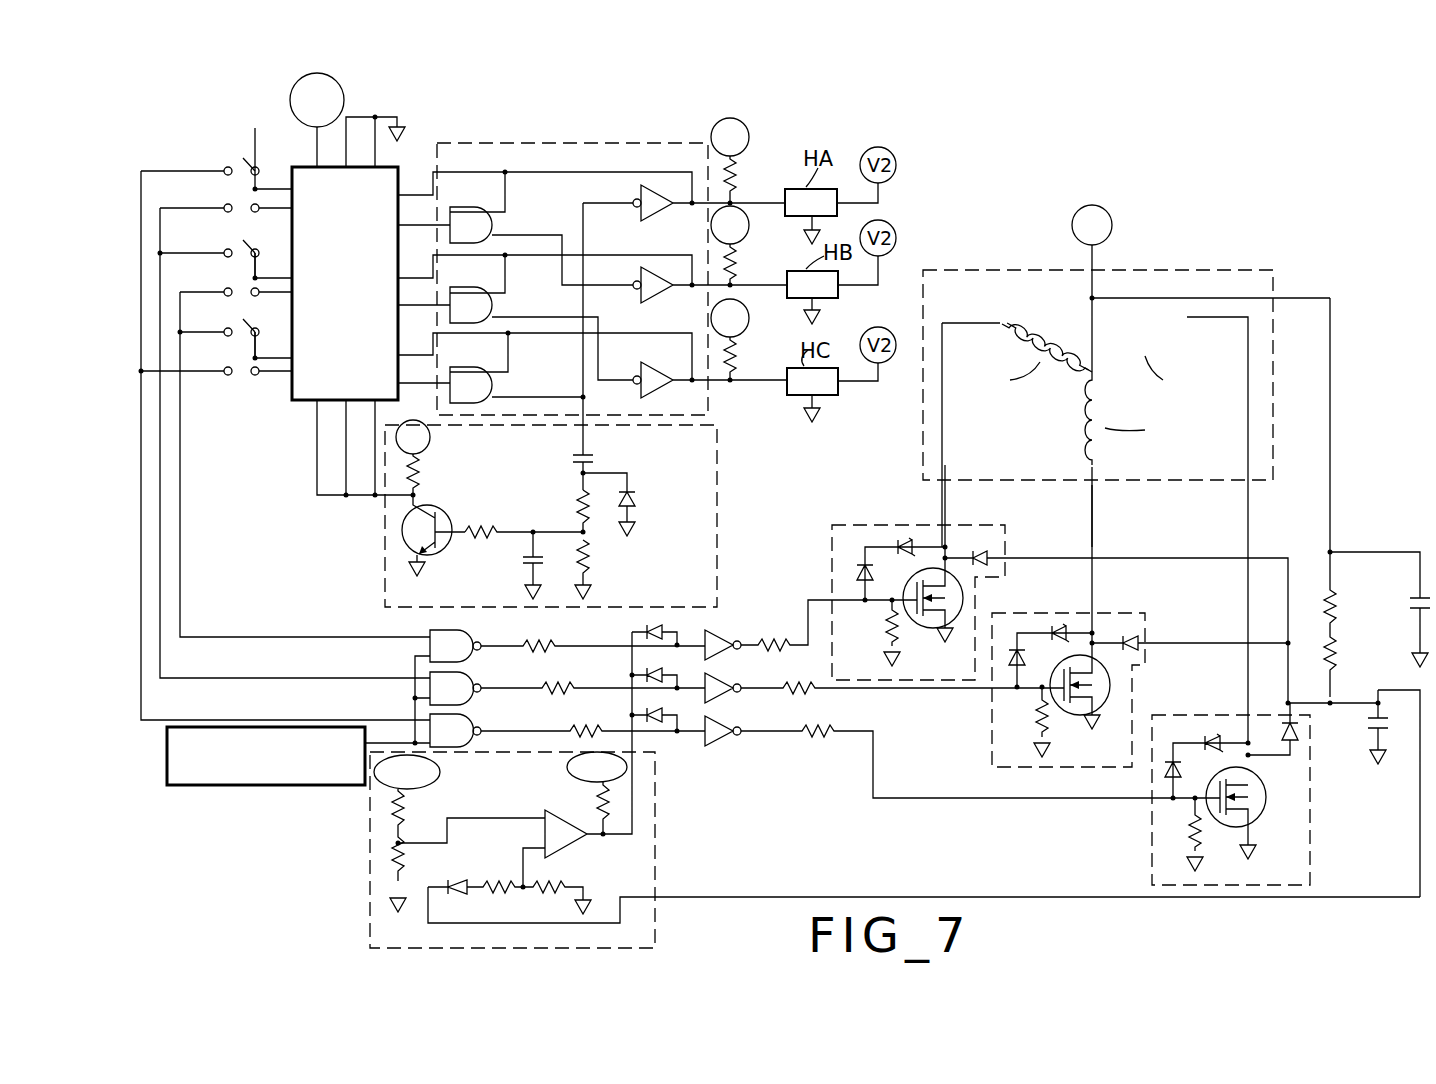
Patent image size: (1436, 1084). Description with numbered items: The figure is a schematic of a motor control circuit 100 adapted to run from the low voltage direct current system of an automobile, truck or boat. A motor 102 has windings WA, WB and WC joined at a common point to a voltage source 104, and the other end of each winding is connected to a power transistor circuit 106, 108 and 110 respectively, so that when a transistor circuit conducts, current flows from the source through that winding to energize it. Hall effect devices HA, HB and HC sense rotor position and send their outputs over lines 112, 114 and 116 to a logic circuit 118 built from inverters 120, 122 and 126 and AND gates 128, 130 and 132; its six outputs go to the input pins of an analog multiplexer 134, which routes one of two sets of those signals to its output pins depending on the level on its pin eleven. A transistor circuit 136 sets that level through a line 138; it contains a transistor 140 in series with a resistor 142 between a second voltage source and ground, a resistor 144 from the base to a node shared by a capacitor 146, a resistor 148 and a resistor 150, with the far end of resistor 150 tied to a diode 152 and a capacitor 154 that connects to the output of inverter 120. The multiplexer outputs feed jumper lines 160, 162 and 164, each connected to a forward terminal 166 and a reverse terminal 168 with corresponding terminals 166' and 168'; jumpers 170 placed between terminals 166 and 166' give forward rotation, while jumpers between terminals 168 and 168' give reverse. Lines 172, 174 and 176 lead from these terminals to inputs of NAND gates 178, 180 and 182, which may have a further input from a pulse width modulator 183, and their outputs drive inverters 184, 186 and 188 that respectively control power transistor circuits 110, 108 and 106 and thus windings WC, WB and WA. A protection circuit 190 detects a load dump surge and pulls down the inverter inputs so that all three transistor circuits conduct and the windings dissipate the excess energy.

The circuit 100 is at (920, 185).
The motor 102 is at (1227, 270).
The voltage source 104 is at (1112, 222).
The power transistor circuit 106 is at (1310, 802).
The power transistor circuit 108 is at (1112, 613).
The power transistor circuit 110 is at (880, 525).
The line 112 is at (766, 198).
The line 114 is at (766, 285).
The line 116 is at (760, 384).
The logic circuit 118 is at (490, 143).
The inverter 120 is at (648, 196).
The inverter 122 is at (650, 278).
The inverter 126 is at (653, 370).
The AND gate 128 is at (480, 204).
The AND gate 130 is at (480, 284).
The AND gate 132 is at (480, 367).
The analog multiplexer 134 is at (292, 388).
The transistor circuit 136 is at (717, 478).
The line 138 is at (375, 440).
The transistor 140 is at (428, 506).
The resistor 142 is at (422, 470).
The resistor 144 is at (478, 526).
The capacitor 146 is at (522, 562).
The resistor 148 is at (595, 556).
The resistor 150 is at (582, 500).
The diode 152 is at (637, 500).
The capacitor 154 is at (572, 457).
The jumper line 160 is at (258, 176).
The jumper line 162 is at (259, 272).
The jumper line 164 is at (259, 352).
The forward terminal 166 is at (289, 222).
The terminal 166' is at (189, 237).
The reverse terminal 168 is at (296, 291).
The terminal 168' is at (198, 294).
The jumper 170 is at (243, 158).
The line 172 is at (141, 518).
The line 174 is at (160, 480).
The line 176 is at (180, 442).
The NAND gate 178 is at (466, 632).
The NAND gate 180 is at (474, 676).
The NAND gate 182 is at (478, 718).
The pulse width modulator 183 is at (265, 786).
The inverter 184 is at (722, 630).
The inverter 186 is at (722, 676).
The inverter 188 is at (724, 718).
The protection circuit 190 is at (657, 807).